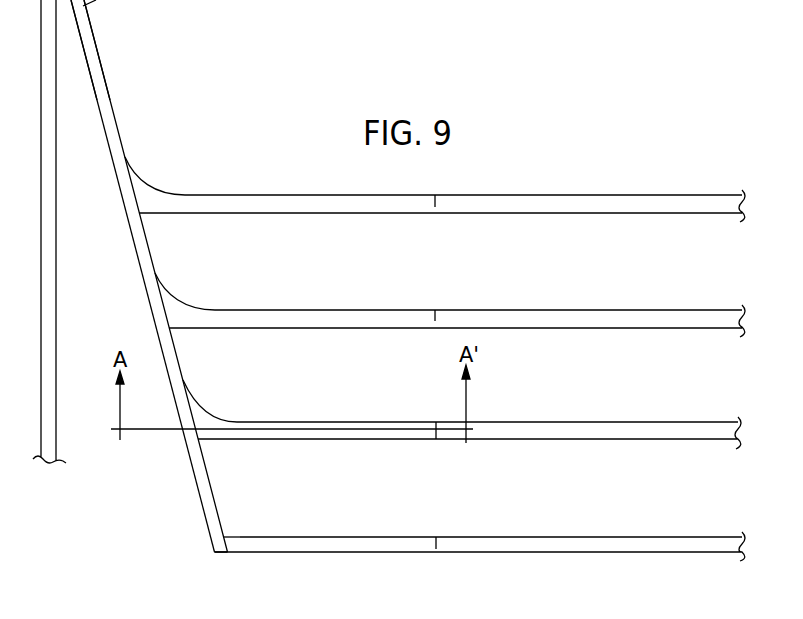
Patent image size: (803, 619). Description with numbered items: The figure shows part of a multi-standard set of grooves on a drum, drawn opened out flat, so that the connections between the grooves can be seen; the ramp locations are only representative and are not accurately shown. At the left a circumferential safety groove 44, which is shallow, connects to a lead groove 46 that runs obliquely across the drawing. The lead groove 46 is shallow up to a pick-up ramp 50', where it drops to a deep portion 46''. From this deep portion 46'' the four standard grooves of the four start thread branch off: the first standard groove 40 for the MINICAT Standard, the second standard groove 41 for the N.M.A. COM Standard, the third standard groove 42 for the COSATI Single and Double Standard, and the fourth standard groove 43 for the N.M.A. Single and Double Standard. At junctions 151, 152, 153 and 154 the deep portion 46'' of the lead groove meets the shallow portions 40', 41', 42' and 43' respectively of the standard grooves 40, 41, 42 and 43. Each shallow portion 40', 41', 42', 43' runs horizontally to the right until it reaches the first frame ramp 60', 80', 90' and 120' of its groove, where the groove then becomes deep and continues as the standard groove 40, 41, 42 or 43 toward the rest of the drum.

The circumferential safety groove 44 is at (52, 280).
The lead groove 46 is at (143, 276).
The deep portion of lead groove 46'' is at (156, 276).
The pick-up ramp 50' is at (121, 50).
The junction 151 is at (143, 181).
The junction 152 is at (173, 302).
The junction 153 is at (202, 412).
The junction 154 is at (228, 532).
The shallow portion of first standard groove 40' is at (287, 187).
The shallow portion of second standard groove 41' is at (302, 300).
The shallow portion of third standard groove 42' is at (316, 410).
The shallow portion of fourth standard groove 43' is at (325, 525).
The first standard groove 40 is at (590, 185).
The second standard groove 41 is at (590, 300).
The third standard groove 42 is at (588, 415).
The fourth standard groove 43 is at (590, 532).
The first frame ramp 60' is at (465, 184).
The first frame ramp 80' is at (466, 298).
The first frame ramp 90' is at (465, 448).
The first frame ramp 120' is at (473, 560).